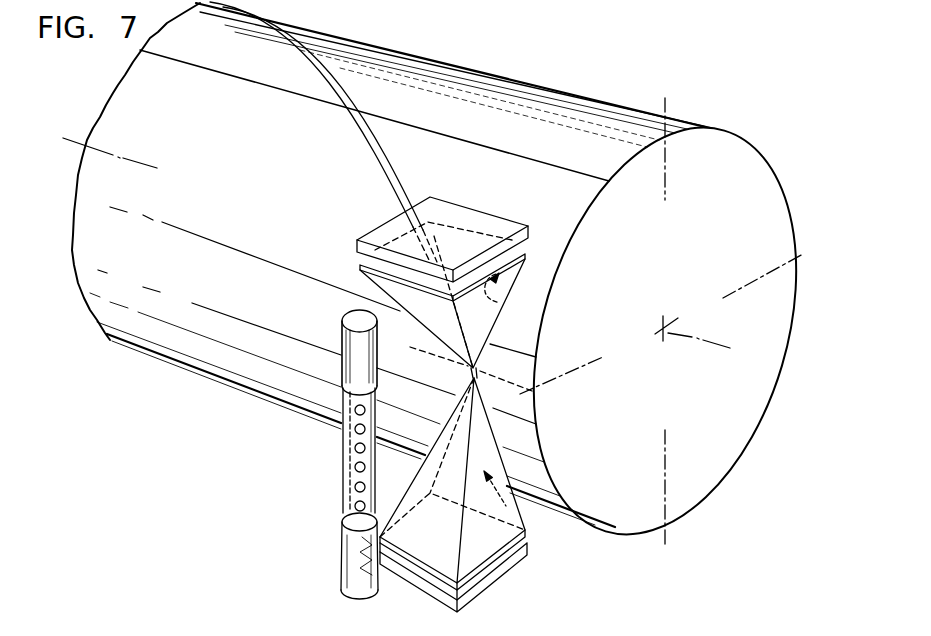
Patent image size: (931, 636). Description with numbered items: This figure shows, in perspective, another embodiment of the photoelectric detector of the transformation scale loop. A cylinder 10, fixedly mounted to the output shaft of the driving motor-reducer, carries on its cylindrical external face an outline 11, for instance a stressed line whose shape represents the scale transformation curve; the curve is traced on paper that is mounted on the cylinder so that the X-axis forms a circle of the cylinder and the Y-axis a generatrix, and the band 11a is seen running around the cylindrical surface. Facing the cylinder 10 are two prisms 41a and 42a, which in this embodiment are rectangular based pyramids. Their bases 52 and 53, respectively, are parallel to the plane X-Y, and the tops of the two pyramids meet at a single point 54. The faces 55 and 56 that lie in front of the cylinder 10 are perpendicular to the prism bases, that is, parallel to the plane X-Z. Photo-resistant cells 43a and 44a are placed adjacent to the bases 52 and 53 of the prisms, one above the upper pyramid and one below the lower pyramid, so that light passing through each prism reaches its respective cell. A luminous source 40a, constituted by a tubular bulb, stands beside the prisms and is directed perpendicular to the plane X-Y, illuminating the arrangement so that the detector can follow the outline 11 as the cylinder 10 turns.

The cylinder 10 is at (586, 219).
The outline 11 is at (145, 116).
The circumferential band on drum 11a is at (368, 131).
The luminous source 40a is at (350, 346).
The prism 41a is at (500, 324).
The prism 42a is at (514, 474).
The photo-resistant cell 43a is at (505, 197).
The photo-resistant cell 44a is at (515, 557).
The base 52 is at (524, 249).
The base 53 is at (486, 573).
The point 54 is at (479, 367).
The face 55 is at (497, 302).
The face 56 is at (523, 520).